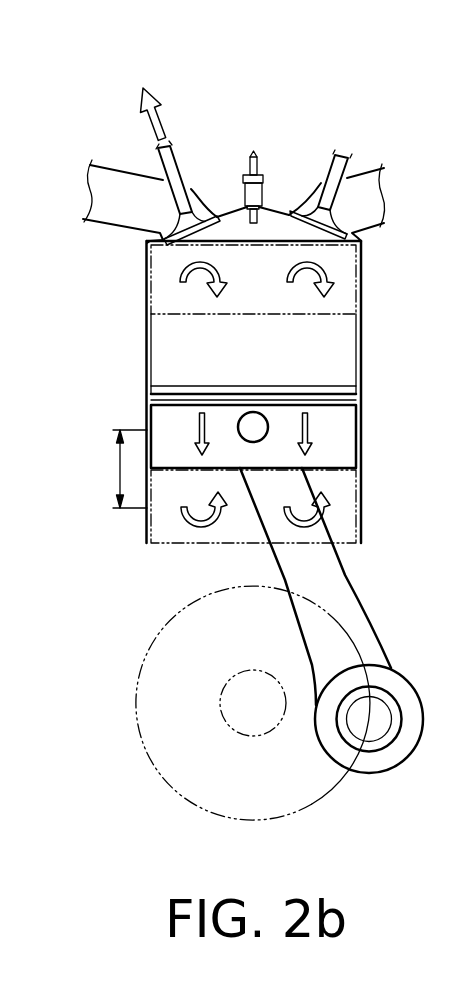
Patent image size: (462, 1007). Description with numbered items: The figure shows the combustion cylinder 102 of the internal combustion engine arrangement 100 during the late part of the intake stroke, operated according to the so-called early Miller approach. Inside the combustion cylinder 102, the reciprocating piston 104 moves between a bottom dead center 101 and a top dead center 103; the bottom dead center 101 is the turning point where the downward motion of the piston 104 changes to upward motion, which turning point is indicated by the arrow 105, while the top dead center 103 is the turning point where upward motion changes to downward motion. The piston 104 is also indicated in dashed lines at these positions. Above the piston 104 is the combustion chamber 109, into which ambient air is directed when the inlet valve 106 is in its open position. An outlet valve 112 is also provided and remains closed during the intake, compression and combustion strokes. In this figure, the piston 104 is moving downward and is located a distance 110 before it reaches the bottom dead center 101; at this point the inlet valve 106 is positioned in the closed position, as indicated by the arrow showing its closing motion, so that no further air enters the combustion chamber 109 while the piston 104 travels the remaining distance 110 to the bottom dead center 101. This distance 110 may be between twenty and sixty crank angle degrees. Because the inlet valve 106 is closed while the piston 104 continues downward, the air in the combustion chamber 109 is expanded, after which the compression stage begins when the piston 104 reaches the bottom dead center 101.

The internal combustion engine arrangement 100 is at (188, 93).
The bottom dead center 101 is at (358, 508).
The combustion cylinder 102 is at (132, 375).
The top dead center 103 is at (360, 295).
The reciprocating piston 104 is at (147, 302).
The arrow 105 is at (183, 523).
The inlet valve 106 is at (190, 220).
The combustion chamber 109 is at (313, 355).
The distance 110 is at (108, 469).
The outlet valve 112 is at (333, 170).